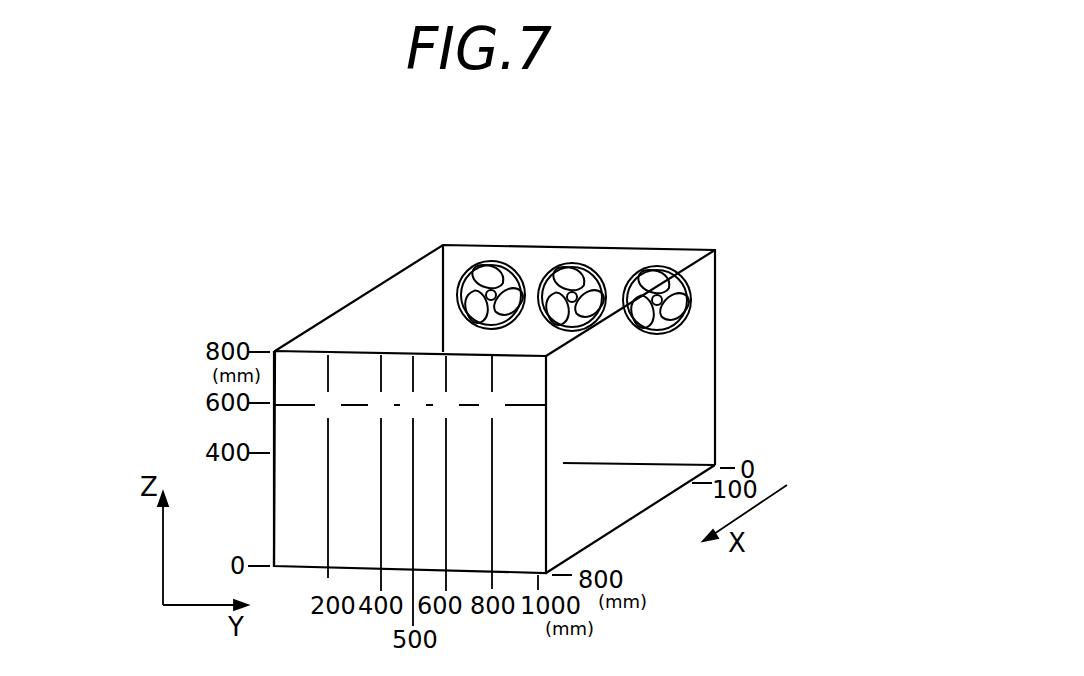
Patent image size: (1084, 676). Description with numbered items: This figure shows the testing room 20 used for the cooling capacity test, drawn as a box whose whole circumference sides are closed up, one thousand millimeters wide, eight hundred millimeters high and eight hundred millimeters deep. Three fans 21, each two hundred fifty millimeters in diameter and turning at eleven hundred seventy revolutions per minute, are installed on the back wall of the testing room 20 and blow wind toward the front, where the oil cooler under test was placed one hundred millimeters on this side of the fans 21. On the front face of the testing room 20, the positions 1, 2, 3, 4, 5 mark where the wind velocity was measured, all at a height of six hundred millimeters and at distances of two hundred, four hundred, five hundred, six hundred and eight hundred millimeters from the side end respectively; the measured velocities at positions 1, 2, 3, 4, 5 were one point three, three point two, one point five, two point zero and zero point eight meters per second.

The testing room 20 is at (368, 283).
The fan 21 is at (491, 278).
The position 1 is at (328, 466).
The position 2 is at (381, 473).
The position 3 is at (413, 491).
The position 4 is at (446, 473).
The position 5 is at (492, 472).